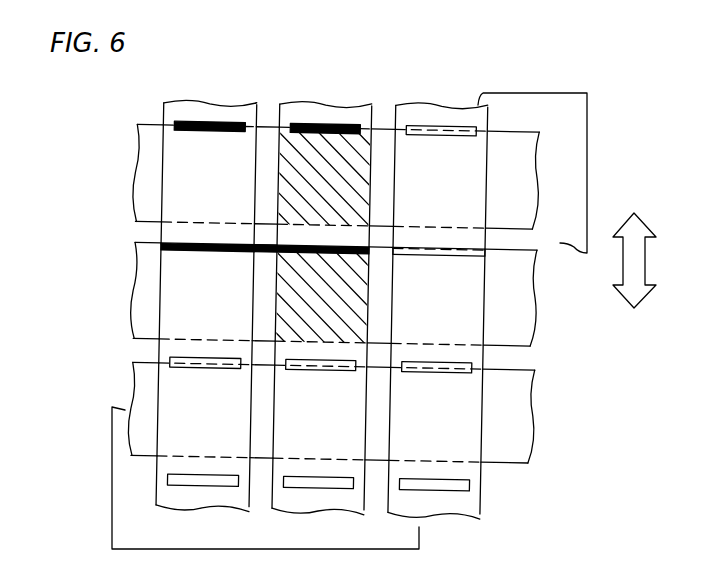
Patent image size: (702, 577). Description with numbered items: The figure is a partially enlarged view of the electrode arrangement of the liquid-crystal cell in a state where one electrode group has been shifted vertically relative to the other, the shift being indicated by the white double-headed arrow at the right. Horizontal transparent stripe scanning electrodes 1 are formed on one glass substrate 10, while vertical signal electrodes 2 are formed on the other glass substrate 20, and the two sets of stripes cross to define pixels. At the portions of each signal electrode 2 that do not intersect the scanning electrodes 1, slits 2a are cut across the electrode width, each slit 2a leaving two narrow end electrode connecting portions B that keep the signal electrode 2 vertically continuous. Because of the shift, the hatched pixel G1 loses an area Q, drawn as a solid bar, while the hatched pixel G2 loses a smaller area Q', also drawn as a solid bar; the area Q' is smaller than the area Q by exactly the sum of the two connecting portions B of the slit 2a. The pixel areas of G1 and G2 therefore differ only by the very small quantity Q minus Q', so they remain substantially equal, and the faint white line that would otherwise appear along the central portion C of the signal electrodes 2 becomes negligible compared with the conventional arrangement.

The scanning electrode 1 is at (523, 177).
The signal electrode 2 is at (228, 507).
The slit 2a is at (203, 124).
The glass substrate 10 is at (565, 104).
The glass substrate 20 is at (120, 524).
The electrode connecting portion B is at (168, 138).
The central portion C is at (160, 244).
The decreased area Q is at (256, 218).
The decreased area Q' is at (355, 92).
The pixel G1 is at (320, 298).
The pixel G2 is at (324, 179).